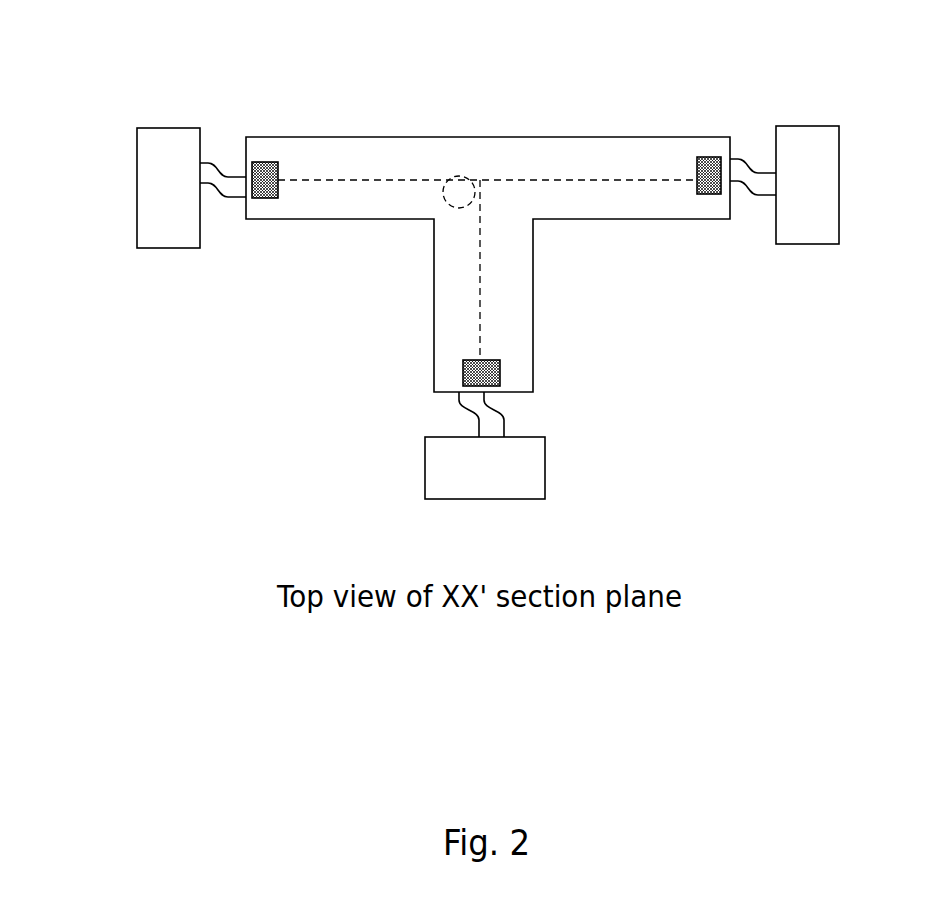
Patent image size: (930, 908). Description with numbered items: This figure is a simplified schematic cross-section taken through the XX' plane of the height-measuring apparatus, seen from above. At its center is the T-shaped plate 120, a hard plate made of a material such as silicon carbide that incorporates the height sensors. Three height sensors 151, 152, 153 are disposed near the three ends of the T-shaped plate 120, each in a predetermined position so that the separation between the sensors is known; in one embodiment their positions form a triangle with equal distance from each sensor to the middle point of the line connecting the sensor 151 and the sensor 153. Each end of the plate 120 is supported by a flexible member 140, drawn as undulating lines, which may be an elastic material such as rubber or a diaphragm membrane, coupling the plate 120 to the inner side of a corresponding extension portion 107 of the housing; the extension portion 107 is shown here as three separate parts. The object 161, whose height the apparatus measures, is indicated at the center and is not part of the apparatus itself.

The extension portion 107 is at (147, 153).
The plate 120 is at (500, 143).
The flexible members 140 is at (752, 156).
The height sensor 151 is at (262, 158).
The height sensor 152 is at (497, 375).
The height sensor 153 is at (712, 194).
The object 161 is at (455, 180).